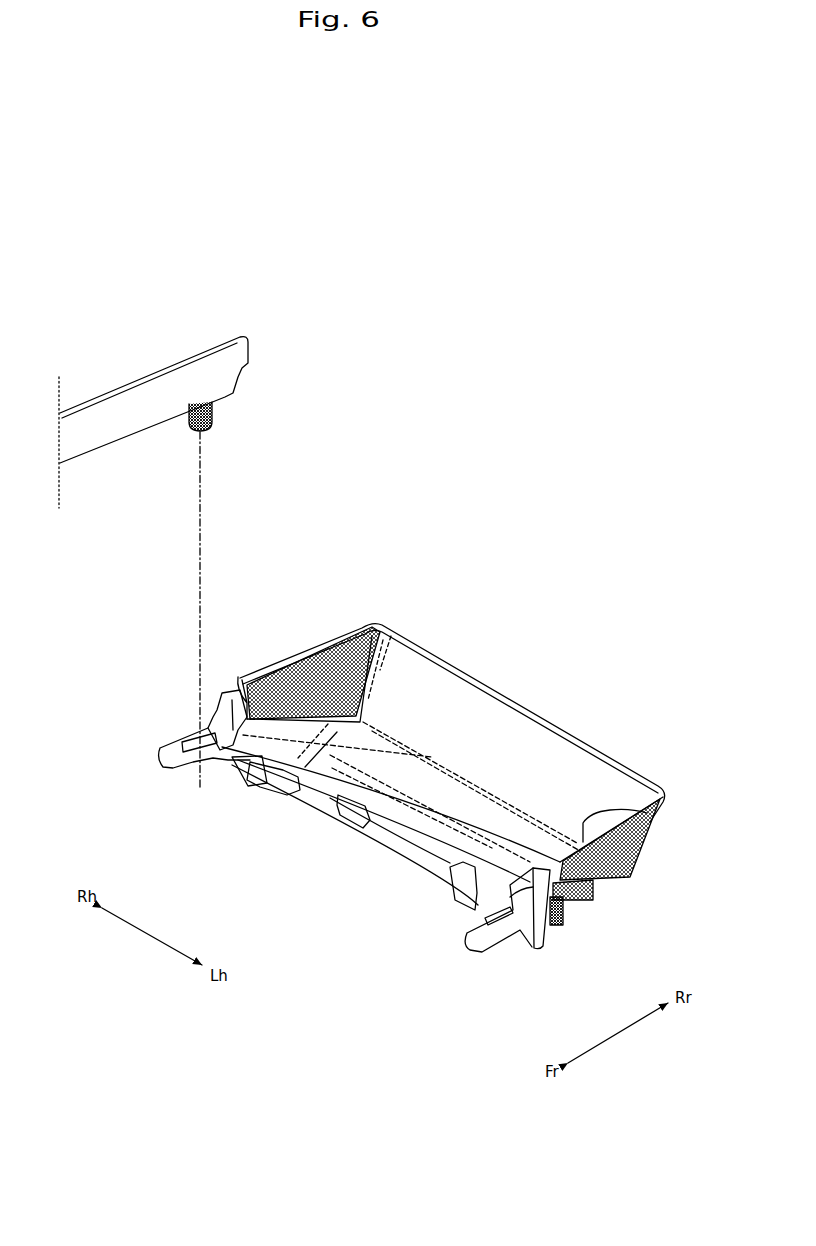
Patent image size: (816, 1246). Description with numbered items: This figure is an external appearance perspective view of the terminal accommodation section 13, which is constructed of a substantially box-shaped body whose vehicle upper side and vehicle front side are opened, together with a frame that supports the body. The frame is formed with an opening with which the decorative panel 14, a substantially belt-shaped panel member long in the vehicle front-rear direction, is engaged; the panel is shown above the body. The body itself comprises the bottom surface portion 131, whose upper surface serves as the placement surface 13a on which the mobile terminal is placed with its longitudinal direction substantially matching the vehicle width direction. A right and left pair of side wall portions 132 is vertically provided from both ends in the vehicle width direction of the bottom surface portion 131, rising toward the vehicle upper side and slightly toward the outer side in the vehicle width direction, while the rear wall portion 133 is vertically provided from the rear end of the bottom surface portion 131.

The decorative panel 14 is at (172, 362).
The terminal accommodation section 13 is at (482, 682).
The placement surface 13a is at (303, 772).
The bottom surface portion 131 is at (352, 815).
The side wall portion 132 is at (310, 657).
The rear wall portion 133 is at (523, 740).